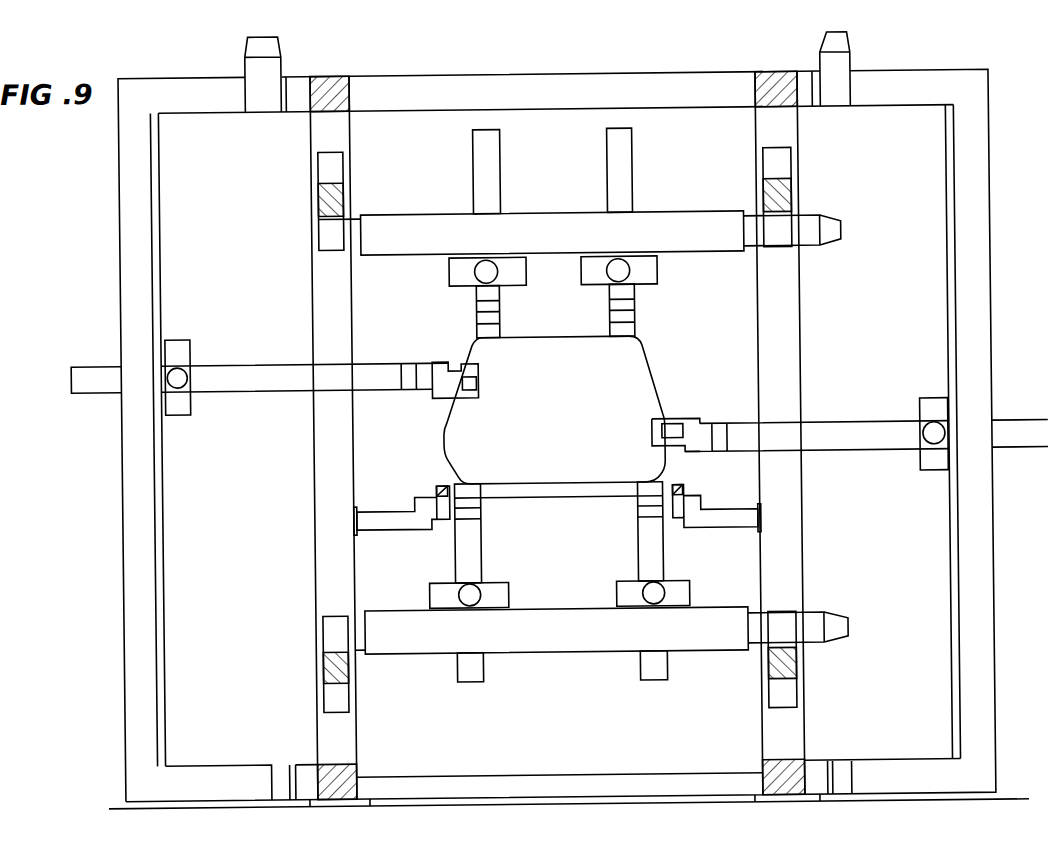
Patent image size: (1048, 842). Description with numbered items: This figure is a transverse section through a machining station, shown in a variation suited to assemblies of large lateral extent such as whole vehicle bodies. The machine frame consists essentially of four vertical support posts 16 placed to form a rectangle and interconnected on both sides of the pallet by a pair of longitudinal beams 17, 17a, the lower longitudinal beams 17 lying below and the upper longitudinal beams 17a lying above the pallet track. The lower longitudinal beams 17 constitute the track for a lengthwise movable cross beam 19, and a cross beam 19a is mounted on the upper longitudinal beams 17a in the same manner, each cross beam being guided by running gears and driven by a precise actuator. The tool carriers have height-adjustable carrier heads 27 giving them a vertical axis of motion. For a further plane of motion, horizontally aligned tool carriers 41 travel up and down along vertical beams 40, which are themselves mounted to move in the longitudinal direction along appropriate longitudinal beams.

The vertical beam 40 is at (132, 217).
The vertical support post 16 is at (349, 748).
The lower longitudinal beam 17 is at (343, 673).
The upper longitudinal beam 17a is at (343, 196).
The cross beam 19 is at (710, 641).
The cross beam 19a is at (685, 225).
The carrier head 27 is at (613, 177).
The horizontally aligned tool carrier 41 is at (398, 392).